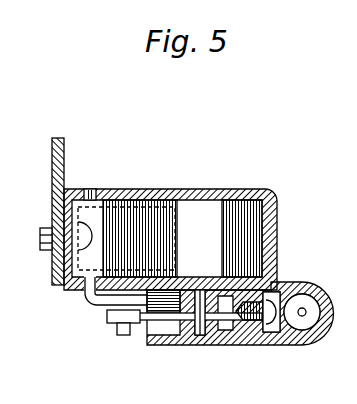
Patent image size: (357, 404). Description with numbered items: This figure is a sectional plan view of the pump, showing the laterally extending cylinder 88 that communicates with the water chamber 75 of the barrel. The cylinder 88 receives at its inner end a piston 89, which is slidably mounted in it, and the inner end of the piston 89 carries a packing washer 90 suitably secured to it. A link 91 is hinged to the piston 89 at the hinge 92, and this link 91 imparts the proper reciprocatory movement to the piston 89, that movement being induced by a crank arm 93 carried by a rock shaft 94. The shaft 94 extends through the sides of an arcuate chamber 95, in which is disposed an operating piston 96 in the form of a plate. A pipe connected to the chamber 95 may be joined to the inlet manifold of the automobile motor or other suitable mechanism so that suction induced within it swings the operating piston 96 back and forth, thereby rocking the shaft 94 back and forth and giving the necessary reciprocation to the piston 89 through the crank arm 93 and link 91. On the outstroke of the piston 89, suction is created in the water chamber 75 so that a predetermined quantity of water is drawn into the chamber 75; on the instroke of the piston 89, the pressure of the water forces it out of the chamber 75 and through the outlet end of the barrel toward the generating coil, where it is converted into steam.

The water chamber 75 is at (310, 337).
The cylinder 88 is at (170, 346).
The piston 89 is at (246, 338).
The packing washer 90 is at (276, 341).
The link 91 is at (150, 321).
The hinge 92 is at (200, 338).
The crank arm 93 is at (120, 326).
The rock shaft 94 is at (82, 290).
The arcuate chamber 95 is at (277, 232).
The operating piston 96 is at (124, 198).